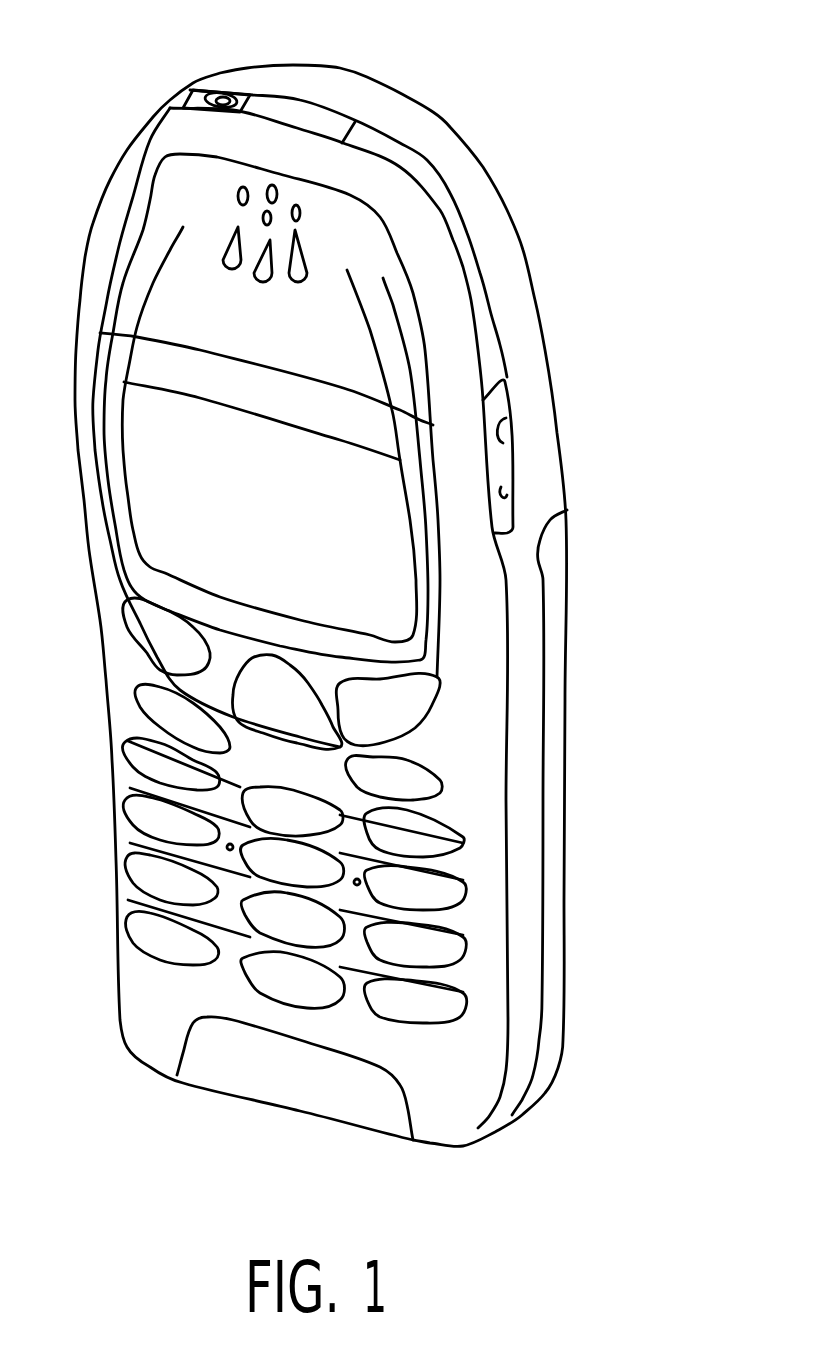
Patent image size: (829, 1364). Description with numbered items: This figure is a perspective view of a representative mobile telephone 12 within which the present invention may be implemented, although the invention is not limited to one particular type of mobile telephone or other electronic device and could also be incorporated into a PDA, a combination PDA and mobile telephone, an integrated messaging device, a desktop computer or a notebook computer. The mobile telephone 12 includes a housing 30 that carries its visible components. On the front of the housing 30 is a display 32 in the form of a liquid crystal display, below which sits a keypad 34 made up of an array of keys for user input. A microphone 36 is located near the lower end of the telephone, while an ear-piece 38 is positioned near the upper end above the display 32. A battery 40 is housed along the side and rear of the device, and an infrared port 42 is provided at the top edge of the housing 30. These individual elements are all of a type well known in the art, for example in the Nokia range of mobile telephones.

The mobile telephone 12 is at (486, 66).
The housing 30 is at (517, 285).
The display 32 is at (380, 567).
The keypad 34 is at (413, 1012).
The microphone 36 is at (210, 1060).
The ear-piece 38 is at (247, 227).
The battery 40 is at (553, 987).
The infrared port 42 is at (297, 110).